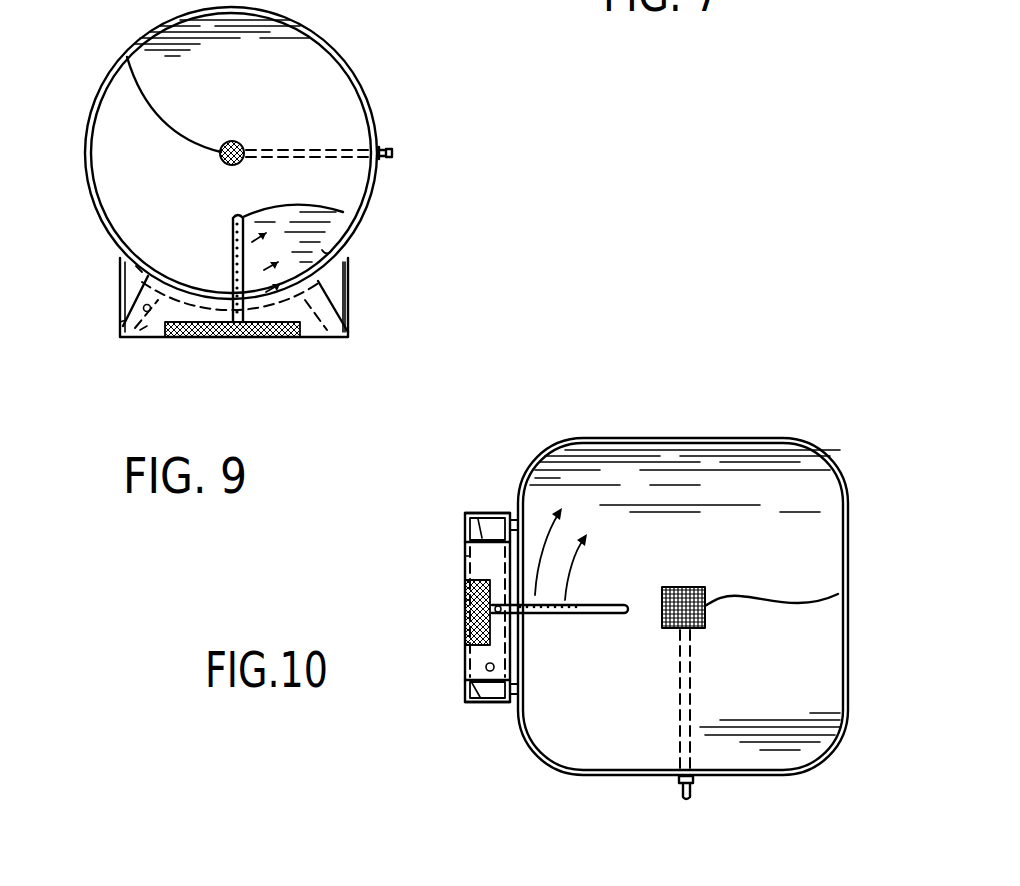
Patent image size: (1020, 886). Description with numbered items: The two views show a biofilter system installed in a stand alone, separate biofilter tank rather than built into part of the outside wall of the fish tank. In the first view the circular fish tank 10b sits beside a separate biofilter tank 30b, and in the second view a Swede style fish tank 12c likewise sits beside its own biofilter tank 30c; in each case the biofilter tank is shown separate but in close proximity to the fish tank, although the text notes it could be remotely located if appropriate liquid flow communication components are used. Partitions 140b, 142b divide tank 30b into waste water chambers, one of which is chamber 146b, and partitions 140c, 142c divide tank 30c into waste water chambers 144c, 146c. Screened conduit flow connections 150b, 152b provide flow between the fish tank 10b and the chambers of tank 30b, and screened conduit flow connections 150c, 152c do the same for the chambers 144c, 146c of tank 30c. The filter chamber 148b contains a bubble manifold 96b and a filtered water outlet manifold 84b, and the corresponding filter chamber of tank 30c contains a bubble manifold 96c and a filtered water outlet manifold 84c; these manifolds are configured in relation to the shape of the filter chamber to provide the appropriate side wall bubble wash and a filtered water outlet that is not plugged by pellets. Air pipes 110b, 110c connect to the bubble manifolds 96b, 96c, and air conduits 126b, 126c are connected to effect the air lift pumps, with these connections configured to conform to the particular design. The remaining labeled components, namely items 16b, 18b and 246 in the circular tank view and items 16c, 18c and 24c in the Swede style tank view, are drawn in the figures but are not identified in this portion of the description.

In FIG. 9, the circular fish tank 10b is at (342, 58).
In FIG. 9, the float with tether 16b is at (132, 55).
In FIG. 9, the valve 18b is at (394, 146).
In FIG. 9, the perforated conduit 246 is at (338, 209).
In FIG. 9, the biofilter tank 30b is at (348, 338).
In FIG. 9, the screened conduit flow connection 150b is at (328, 253).
In FIG. 9, the waste water chamber 146b is at (340, 295).
In FIG. 9, the partition 142b is at (345, 322).
In FIG. 9, the filtered water outlet manifold 84b is at (277, 340).
In FIG. 9, the filter chamber 148b is at (157, 318).
In FIG. 9, the air conduit 126b is at (250, 340).
In FIG. 9, the bubble manifold 96b is at (145, 328).
In FIG. 9, the partition 140b is at (120, 322).
In FIG. 9, the air pipe 110b is at (129, 310).
In FIG. 9, the screened conduit flow connection 152b is at (138, 272).
In FIG. 10, the container 12c is at (782, 437).
In FIG. 10, the float with tether 16c is at (838, 594).
In FIG. 10, the valve 18c is at (692, 797).
In FIG. 10, the perforated conduit 24c is at (558, 617).
In FIG. 10, the biofilter tank 30c is at (466, 690).
In FIG. 10, the waste water chamber 144c is at (492, 522).
In FIG. 10, the partition 140c is at (480, 512).
In FIG. 10, the screened conduit flow connection 152c is at (518, 525).
In FIG. 10, the bubble manifold 96c is at (465, 556).
In FIG. 10, the filtered water outlet manifold 84c is at (466, 600).
In FIG. 10, the air conduit 126c is at (468, 612).
In FIG. 10, the air pipe 110c is at (486, 667).
In FIG. 10, the waste water chamber 146c is at (494, 699).
In FIG. 10, the partition 142c is at (470, 699).
In FIG. 10, the screened conduit flow connection 150c is at (522, 689).